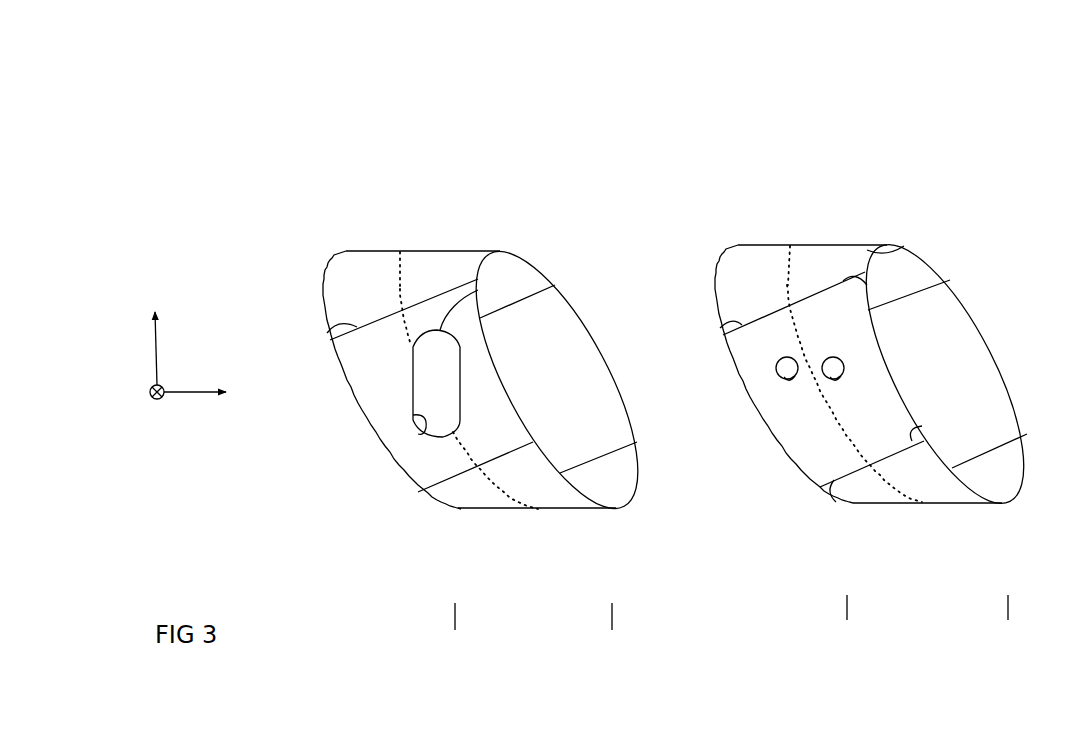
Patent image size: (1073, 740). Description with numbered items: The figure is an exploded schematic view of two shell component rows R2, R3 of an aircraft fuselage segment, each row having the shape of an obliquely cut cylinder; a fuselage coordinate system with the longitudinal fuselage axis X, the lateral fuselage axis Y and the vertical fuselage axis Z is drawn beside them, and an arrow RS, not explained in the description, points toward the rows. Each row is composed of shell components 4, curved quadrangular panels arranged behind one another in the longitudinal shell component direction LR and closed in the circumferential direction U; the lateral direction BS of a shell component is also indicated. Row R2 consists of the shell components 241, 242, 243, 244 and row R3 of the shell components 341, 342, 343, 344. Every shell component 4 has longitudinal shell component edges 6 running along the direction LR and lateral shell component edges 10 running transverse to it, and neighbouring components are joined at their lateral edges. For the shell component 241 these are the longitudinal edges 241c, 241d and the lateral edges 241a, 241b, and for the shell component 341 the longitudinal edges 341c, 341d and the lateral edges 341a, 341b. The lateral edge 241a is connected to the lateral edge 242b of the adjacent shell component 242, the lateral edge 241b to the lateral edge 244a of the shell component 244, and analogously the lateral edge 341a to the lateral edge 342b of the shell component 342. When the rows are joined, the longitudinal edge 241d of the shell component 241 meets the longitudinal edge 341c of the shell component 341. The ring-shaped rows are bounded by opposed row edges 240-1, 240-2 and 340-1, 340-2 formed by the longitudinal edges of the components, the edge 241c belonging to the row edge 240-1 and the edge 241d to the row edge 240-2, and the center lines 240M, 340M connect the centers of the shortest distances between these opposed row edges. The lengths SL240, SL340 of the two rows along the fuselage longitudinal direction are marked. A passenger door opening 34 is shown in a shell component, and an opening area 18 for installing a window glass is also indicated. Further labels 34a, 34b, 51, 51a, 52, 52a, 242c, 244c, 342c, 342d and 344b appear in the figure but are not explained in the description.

The shell component 4 is at (345, 266).
The longitudinal shell component edge 6 is at (377, 317).
The lateral shell component edge 10 is at (353, 395).
The opening area 18 is at (774, 368).
The passenger door opening 34 is at (478, 279).
The slot opening 34a is at (455, 395).
The slot bottom 34b is at (423, 432).
The first hole 51 is at (783, 377).
The first hole bottom 51a is at (777, 392).
The second hole 52 is at (846, 367).
The second hole bottom 52a is at (841, 380).
The row edge 240-1 is at (356, 417).
The row edge 240-2 is at (568, 289).
The center line 240M is at (396, 250).
The shell component 241 is at (504, 432).
The lateral shell component edge 241a is at (328, 332).
The lateral shell component edge 241b is at (464, 473).
The longitudinal shell component edge 241c is at (390, 455).
The longitudinal shell component edge 241d is at (517, 410).
The shell component 242 is at (392, 290).
The lateral shell component edge 242b is at (328, 360).
The edge of second segment 242c is at (322, 285).
The shell component 243 is at (566, 365).
The shell component 244 is at (531, 488).
The lateral shell component edge 244a is at (483, 457).
The edge of fourth segment 244c is at (433, 510).
The row edge 340-1 is at (714, 313).
The row edge 340-2 is at (937, 260).
The center line 340M is at (915, 496).
The shell component 341 is at (850, 314).
The lateral shell component edge 341a is at (722, 323).
The lateral shell component edge 341b is at (836, 488).
The longitudinal shell component edge 341c is at (800, 474).
The longitudinal shell component edge 341d is at (907, 400).
The shell component 342 is at (762, 289).
The lateral shell component edge 342b is at (867, 280).
The edge of second segment 342c is at (718, 276).
The edge of second segment 342d is at (903, 247).
The shell component 343 is at (948, 343).
The shell component 344 is at (932, 482).
The edge of fourth segment 344b is at (923, 423).
The roller set RS is at (247, 150).
The shell component row R2 is at (437, 160).
The shell component row R3 is at (808, 163).
The circumferential direction U is at (407, 290).
The longitudinal shell component direction LR is at (475, 313).
The lateral direction of a shell component BS is at (375, 348).
The length of shell component row SL240 is at (610, 615).
The length of shell component row SL340 is at (1006, 607).
The longitudinal fuselage axis X is at (195, 413).
The lateral fuselage axis Y is at (143, 404).
The vertical fuselage axis Z is at (171, 346).